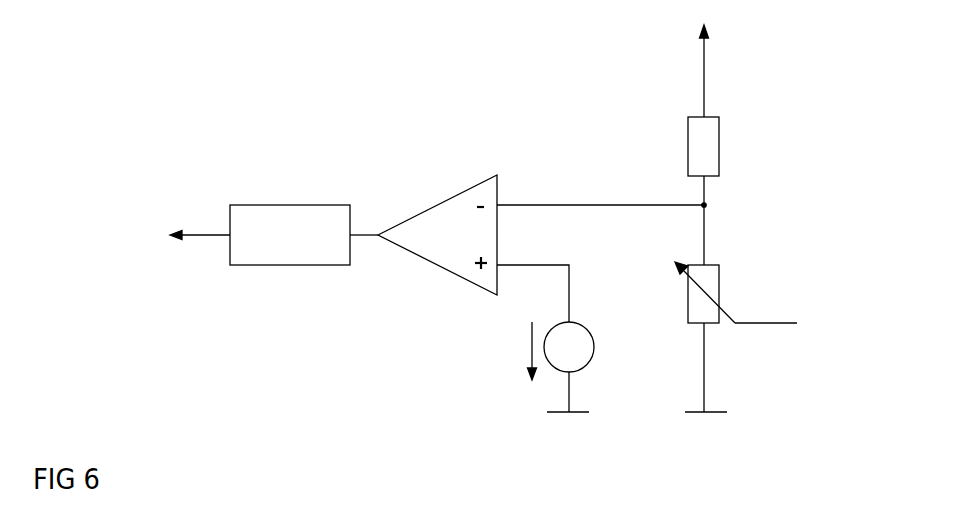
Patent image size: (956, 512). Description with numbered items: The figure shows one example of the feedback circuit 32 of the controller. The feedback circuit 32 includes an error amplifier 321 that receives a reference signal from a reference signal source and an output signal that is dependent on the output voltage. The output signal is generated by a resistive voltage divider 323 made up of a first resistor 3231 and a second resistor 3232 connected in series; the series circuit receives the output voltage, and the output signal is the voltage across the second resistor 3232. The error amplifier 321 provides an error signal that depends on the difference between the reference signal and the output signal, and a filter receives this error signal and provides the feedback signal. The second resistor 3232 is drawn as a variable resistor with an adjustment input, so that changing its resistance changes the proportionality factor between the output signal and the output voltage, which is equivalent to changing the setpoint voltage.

The feedback circuit 32 is at (523, 88).
The error amplifier 321 is at (437, 235).
The resistive voltage divider 323 is at (762, 205).
The first resistor 3231 is at (683, 146).
The second resistor 3232 is at (692, 292).